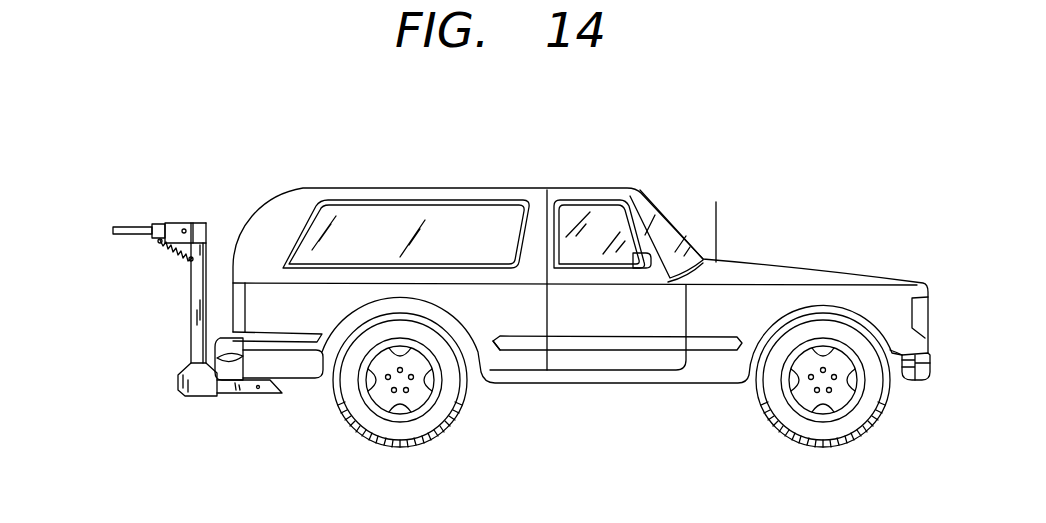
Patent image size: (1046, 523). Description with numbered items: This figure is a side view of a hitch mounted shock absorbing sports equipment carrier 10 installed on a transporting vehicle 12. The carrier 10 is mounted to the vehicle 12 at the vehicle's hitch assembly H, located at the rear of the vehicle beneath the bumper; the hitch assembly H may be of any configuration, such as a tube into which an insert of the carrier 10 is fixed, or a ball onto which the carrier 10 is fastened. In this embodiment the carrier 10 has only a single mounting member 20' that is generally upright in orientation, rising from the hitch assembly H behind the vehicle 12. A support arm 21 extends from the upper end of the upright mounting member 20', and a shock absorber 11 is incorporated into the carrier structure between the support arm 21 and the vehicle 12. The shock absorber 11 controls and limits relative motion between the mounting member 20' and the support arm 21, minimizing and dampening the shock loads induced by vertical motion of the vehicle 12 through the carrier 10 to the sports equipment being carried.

The sports equipment carrier 10 is at (115, 361).
The shock absorber 11 is at (151, 258).
The transporting vehicle 12 is at (534, 165).
The mounting member 20' is at (139, 293).
The support arm 21 is at (134, 209).
The hitch assembly H is at (245, 433).